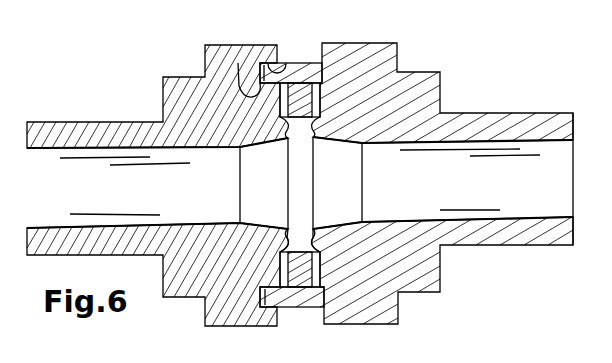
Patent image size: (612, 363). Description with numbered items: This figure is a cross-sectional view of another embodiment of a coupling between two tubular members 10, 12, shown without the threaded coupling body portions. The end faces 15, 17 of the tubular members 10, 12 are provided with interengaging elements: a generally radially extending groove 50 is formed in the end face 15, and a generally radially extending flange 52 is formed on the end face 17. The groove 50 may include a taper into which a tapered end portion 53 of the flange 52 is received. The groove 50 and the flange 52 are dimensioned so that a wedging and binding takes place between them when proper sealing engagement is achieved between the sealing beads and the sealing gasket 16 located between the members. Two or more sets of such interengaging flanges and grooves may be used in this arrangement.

The tubular member 10 is at (124, 90).
The tubular member 12 is at (495, 78).
The end face 15 is at (300, 283).
The sealing gasket 16 is at (308, 178).
The end face 17 is at (307, 305).
The groove 50 is at (292, 62).
The flange 52 is at (308, 60).
The tapered end portion 53 is at (238, 63).